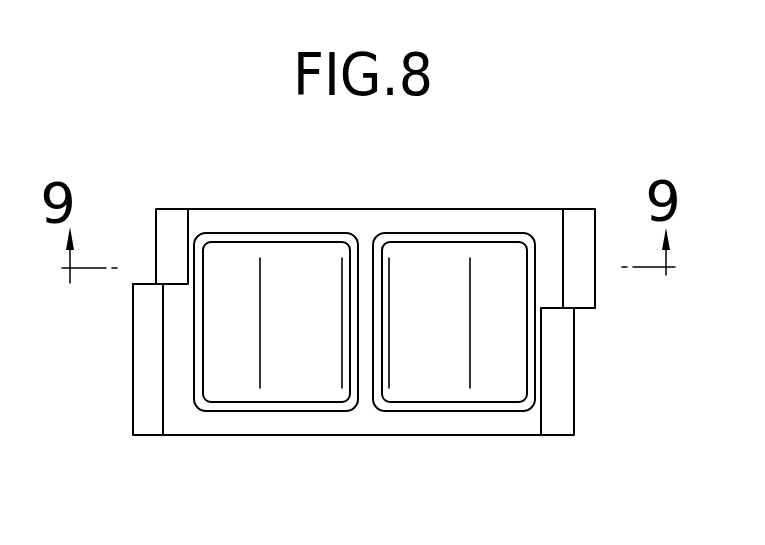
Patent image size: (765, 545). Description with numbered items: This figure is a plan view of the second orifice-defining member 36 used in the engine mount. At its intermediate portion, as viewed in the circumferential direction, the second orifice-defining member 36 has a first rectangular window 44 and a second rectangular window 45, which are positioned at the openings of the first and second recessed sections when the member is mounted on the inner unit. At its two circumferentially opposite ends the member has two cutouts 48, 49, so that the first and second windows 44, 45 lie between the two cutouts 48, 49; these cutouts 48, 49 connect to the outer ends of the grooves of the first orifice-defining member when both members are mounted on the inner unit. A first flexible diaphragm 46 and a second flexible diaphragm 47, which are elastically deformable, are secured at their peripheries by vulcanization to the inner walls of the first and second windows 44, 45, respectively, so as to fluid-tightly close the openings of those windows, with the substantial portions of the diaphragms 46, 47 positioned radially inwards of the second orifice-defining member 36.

The second orifice-defining member 36 is at (513, 185).
The first rectangular window 44 is at (320, 410).
The second rectangular window 45 is at (457, 405).
The first flexible diaphragm 46 is at (292, 260).
The second flexible diaphragm 47 is at (435, 257).
The cutout 48 is at (175, 281).
The cutout 49 is at (548, 311).